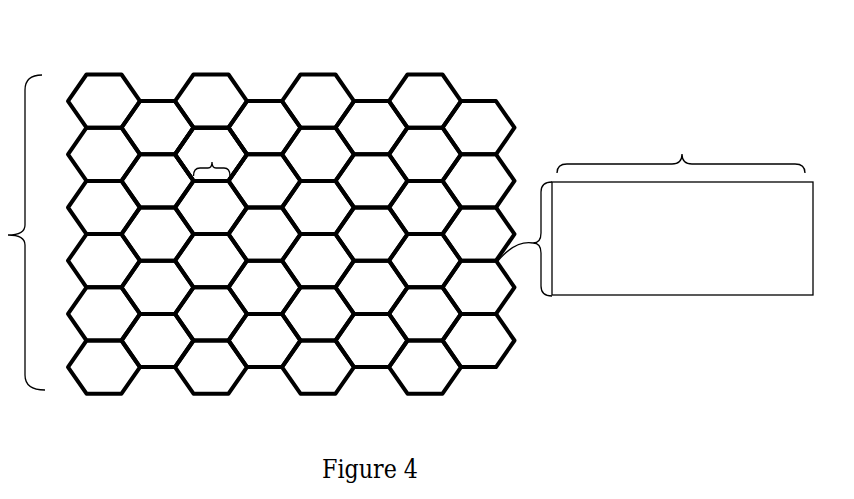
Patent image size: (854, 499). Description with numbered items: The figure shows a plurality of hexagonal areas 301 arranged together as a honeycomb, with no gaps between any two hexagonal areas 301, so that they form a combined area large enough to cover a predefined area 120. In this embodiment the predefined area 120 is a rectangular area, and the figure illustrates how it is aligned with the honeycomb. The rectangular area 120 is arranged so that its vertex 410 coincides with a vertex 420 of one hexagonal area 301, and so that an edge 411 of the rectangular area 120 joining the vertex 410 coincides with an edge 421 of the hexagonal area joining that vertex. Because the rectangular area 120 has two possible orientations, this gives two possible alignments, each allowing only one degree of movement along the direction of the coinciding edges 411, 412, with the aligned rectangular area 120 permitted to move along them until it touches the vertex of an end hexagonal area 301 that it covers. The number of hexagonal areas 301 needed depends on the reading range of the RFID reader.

The hexagonal area 301 is at (365, 115).
The vertex of hexagonal area 420 is at (184, 181).
The edge of hexagonal area 421 is at (212, 162).
The vertex of rectangular area 410 is at (544, 176).
The edge of rectangular area 411 is at (681, 146).
The coinciding edge 412 is at (514, 288).
The predefined area 120 is at (693, 259).